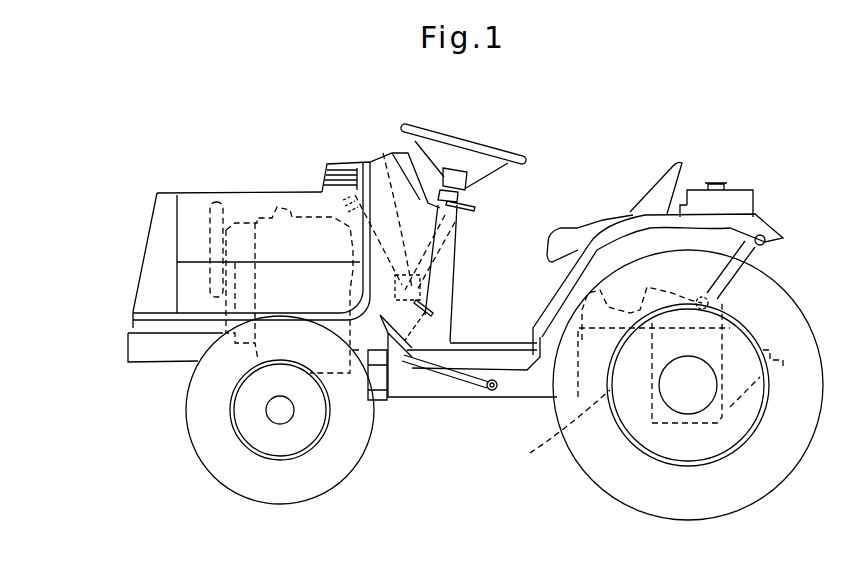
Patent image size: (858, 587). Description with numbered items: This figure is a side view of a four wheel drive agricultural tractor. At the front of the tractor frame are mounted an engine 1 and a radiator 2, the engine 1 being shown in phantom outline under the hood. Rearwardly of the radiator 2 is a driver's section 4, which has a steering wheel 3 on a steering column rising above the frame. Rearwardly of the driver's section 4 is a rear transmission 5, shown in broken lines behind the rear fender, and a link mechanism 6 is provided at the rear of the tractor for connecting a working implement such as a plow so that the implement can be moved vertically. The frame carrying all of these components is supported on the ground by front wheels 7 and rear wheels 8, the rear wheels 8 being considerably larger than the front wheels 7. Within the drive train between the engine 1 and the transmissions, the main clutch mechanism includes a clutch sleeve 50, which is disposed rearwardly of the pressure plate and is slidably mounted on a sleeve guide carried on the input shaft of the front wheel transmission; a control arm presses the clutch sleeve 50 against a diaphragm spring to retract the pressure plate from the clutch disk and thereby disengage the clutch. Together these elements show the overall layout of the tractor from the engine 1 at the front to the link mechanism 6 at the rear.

The engine 1 is at (277, 207).
The radiator 2 is at (407, 290).
The steering wheel 3 is at (519, 160).
The driver's section 4 is at (625, 178).
The rear transmission 5 is at (580, 417).
The link mechanism 6 is at (785, 279).
The front wheels 7 is at (205, 468).
The rear wheels 8 is at (605, 490).
The clutch sleeve 50 is at (500, 342).